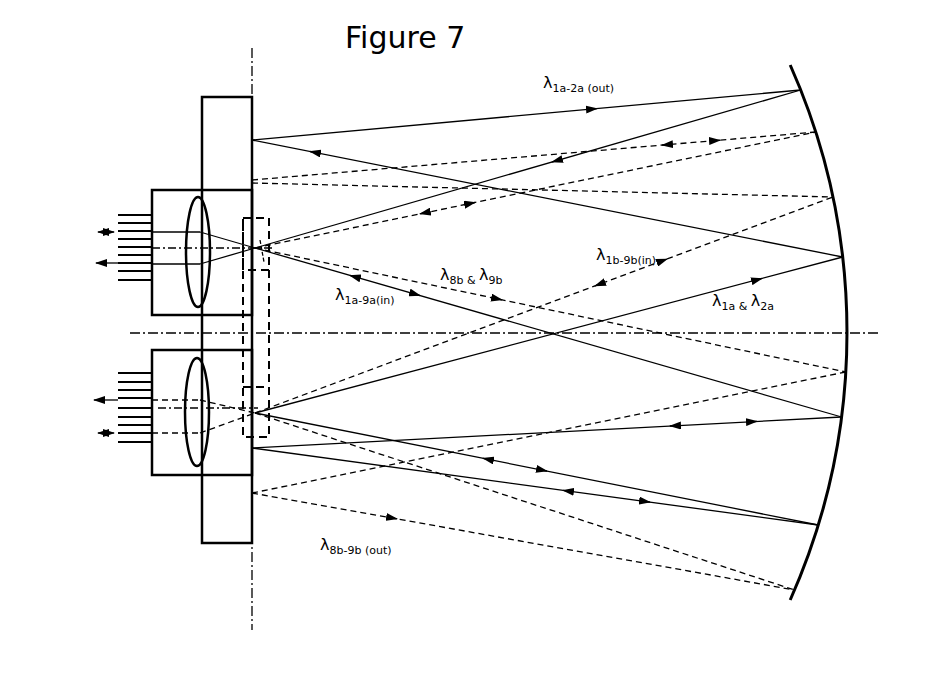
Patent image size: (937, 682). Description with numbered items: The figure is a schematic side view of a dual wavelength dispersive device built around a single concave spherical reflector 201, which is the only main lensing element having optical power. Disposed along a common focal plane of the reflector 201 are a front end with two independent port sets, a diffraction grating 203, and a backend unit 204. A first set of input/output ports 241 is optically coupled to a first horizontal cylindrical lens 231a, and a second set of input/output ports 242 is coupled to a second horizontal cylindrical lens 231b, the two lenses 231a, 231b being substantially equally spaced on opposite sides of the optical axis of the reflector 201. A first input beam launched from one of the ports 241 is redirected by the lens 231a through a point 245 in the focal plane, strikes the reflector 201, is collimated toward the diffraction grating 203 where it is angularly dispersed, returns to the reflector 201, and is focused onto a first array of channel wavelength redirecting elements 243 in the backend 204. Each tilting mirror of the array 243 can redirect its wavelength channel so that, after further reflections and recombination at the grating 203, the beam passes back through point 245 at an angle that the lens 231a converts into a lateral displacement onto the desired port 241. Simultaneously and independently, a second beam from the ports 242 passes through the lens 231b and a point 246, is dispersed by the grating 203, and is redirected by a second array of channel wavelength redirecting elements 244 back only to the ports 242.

The spherical reflector 201 is at (837, 187).
The diffraction grating 203 is at (212, 117).
The backend unit 204 is at (243, 328).
The first horizontal cylindrical lens 231a is at (195, 205).
The second horizontal cylindrical lens 231b is at (193, 455).
The first set of input/output ports 241 is at (140, 210).
The second set of input/output ports 242 is at (137, 453).
The first array of channel wavelength redirecting elements 243 is at (258, 390).
The second array of channel wavelength redirecting elements 244 is at (256, 220).
The point in the focal plane of the reflector 245 is at (259, 244).
The point in the focal plane of the reflector 246 is at (259, 410).